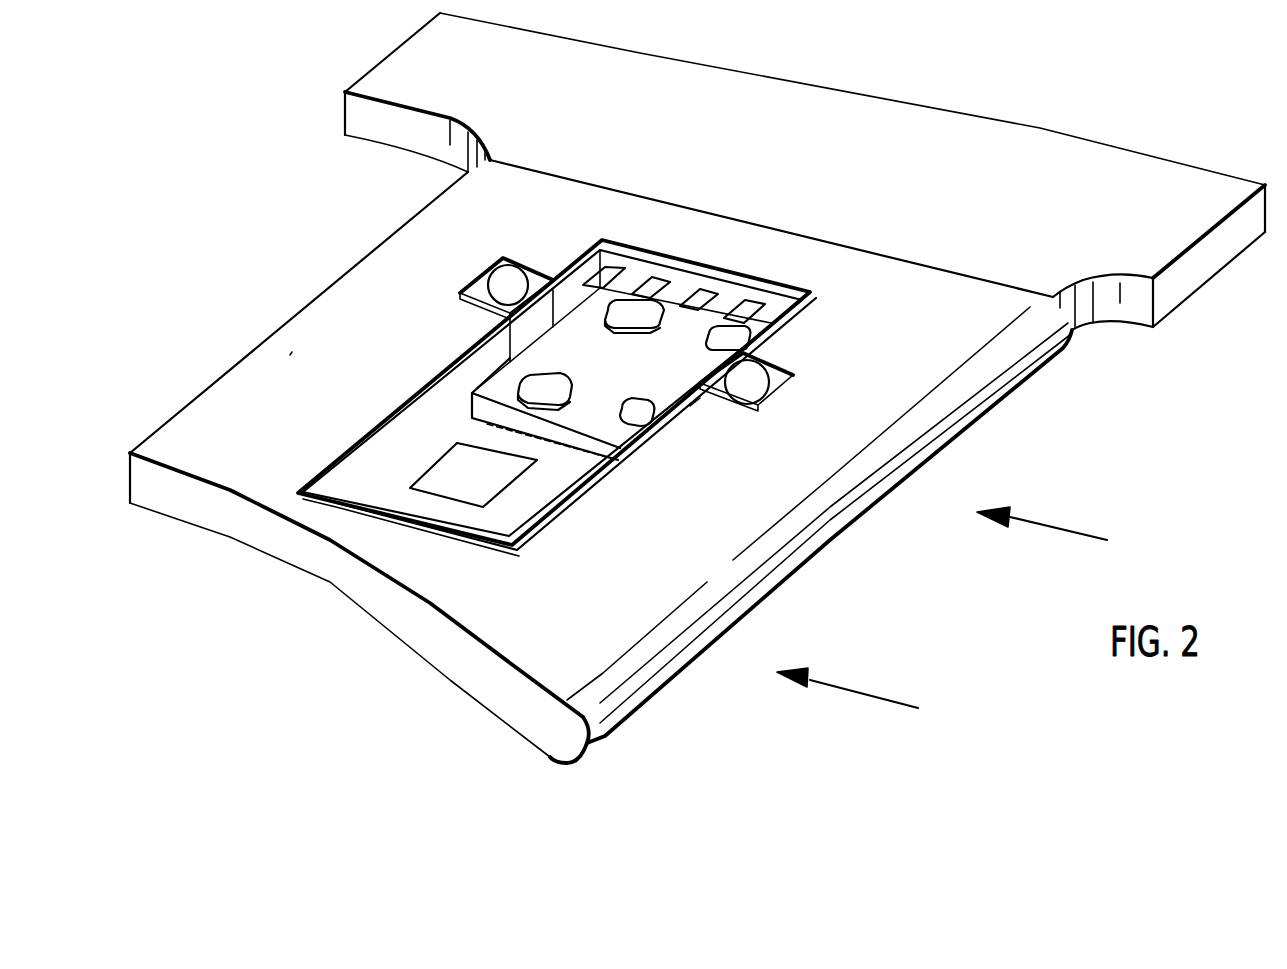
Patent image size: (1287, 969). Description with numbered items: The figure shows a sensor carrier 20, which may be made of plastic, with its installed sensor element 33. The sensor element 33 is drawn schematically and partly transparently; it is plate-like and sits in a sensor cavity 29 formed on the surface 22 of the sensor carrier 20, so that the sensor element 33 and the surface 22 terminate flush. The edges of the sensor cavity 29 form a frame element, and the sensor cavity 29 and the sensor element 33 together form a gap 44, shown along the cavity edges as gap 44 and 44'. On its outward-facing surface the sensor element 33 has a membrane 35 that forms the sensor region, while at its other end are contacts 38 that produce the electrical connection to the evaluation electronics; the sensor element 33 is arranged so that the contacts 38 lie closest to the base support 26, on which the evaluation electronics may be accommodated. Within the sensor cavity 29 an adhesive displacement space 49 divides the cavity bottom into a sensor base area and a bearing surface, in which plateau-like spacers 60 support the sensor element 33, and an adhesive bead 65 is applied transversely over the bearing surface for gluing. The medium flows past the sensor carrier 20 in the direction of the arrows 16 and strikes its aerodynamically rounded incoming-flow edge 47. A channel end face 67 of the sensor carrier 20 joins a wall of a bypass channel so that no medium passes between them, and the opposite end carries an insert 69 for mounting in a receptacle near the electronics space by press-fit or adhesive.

The arrows 16 is at (1080, 535).
The sensor carrier 20 is at (525, 640).
The surface 22 is at (293, 350).
The base support 26 is at (1055, 155).
The sensor cavity 29 is at (517, 520).
The sensor element 33 is at (346, 447).
The membrane 35 is at (497, 478).
The contacts 38 is at (603, 283).
The gap 44 is at (554, 392).
The frame side wall 44' is at (658, 443).
The incoming-flow edge 47 is at (855, 513).
The adhesive displacement space 49 is at (462, 400).
The spacers 60 is at (630, 405).
The adhesive bead 65 is at (503, 285).
The channel end face 67 is at (330, 572).
The insert 69 is at (1180, 282).